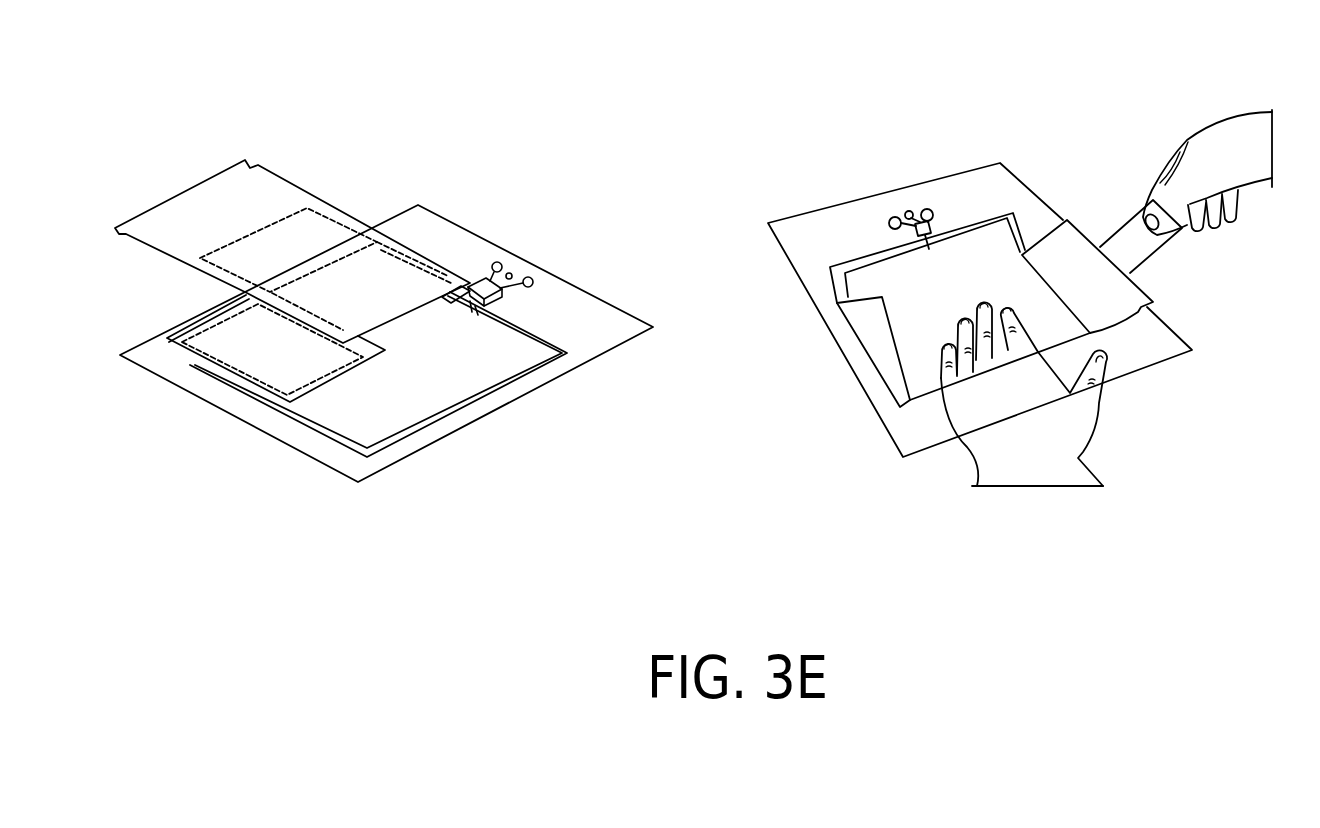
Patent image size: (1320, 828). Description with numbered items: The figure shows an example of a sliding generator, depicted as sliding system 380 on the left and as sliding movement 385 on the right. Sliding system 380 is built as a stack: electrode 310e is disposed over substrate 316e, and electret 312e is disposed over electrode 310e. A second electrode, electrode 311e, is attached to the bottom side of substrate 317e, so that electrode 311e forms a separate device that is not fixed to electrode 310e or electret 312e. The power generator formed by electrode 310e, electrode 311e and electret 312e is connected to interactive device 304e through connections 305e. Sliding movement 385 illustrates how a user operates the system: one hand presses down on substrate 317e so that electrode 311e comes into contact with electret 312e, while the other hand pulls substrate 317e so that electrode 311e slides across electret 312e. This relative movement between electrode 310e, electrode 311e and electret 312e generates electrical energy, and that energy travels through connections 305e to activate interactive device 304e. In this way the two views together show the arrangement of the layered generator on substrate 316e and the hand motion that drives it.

The sliding system 380 is at (533, 119).
The sliding movement 385 is at (1161, 104).
The interactive device 304e is at (520, 271).
The connections 305e is at (449, 424).
The electrode 310e is at (292, 357).
The electrode 311e is at (299, 265).
The electret 312e is at (181, 329).
The substrate 316e is at (592, 332).
The substrate 317e is at (245, 218).